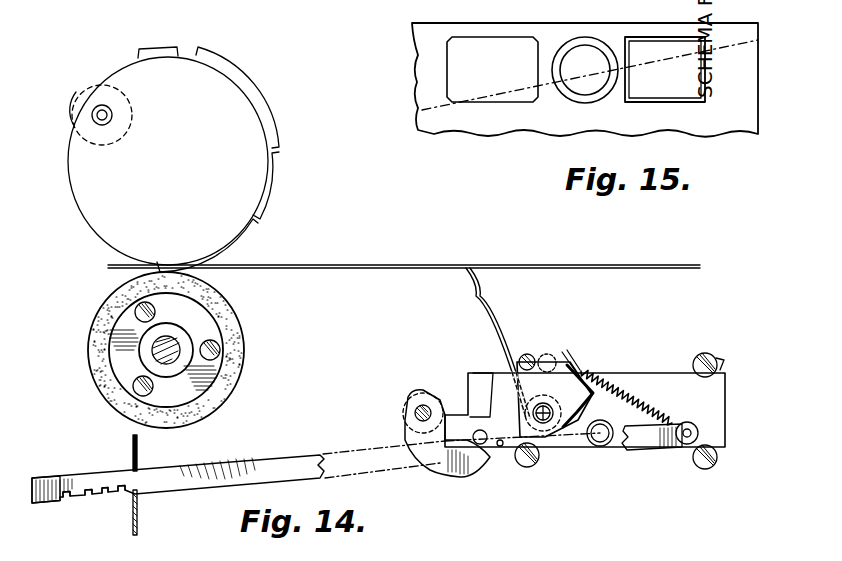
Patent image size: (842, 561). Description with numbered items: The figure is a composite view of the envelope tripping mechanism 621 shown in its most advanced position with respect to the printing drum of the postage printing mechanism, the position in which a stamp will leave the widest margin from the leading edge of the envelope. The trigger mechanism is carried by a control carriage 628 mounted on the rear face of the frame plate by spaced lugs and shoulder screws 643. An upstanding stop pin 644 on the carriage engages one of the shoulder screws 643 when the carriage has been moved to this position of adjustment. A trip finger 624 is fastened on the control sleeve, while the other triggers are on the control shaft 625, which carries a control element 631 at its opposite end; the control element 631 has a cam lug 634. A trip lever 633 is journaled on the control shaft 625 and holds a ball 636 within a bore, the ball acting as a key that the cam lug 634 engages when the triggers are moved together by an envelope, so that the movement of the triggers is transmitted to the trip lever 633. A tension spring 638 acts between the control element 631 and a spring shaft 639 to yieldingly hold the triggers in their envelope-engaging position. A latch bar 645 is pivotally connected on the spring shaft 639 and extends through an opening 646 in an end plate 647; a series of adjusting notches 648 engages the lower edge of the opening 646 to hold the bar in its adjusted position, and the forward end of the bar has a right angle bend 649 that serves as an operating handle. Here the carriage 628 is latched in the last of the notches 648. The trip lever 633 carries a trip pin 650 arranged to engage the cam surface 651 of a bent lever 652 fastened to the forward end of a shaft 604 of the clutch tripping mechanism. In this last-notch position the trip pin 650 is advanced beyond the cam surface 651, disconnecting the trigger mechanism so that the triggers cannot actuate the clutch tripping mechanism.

The shaft 604 is at (416, 405).
The lever assembly 621 is at (627, 345).
The trip finger 624 is at (477, 290).
The control shaft 625 is at (534, 418).
The control carriage 628 is at (717, 406).
The control element 631 is at (605, 416).
The trip lever 633 is at (492, 417).
The cam lug 634 is at (580, 360).
The ball 636 is at (550, 358).
The tension spring 638 is at (638, 400).
The spring shaft 639 is at (688, 416).
The shoulder screws 643 is at (525, 354).
The stop pin 644 is at (719, 360).
The latch bar 645 is at (267, 463).
The opening 646 is at (148, 450).
The end plate 647 is at (138, 518).
The adjusting notches 648 is at (87, 498).
The right angle bend 649 is at (48, 477).
The trip pin 650 is at (476, 434).
The cam surface 651 is at (500, 447).
The bent lever 652 is at (458, 470).